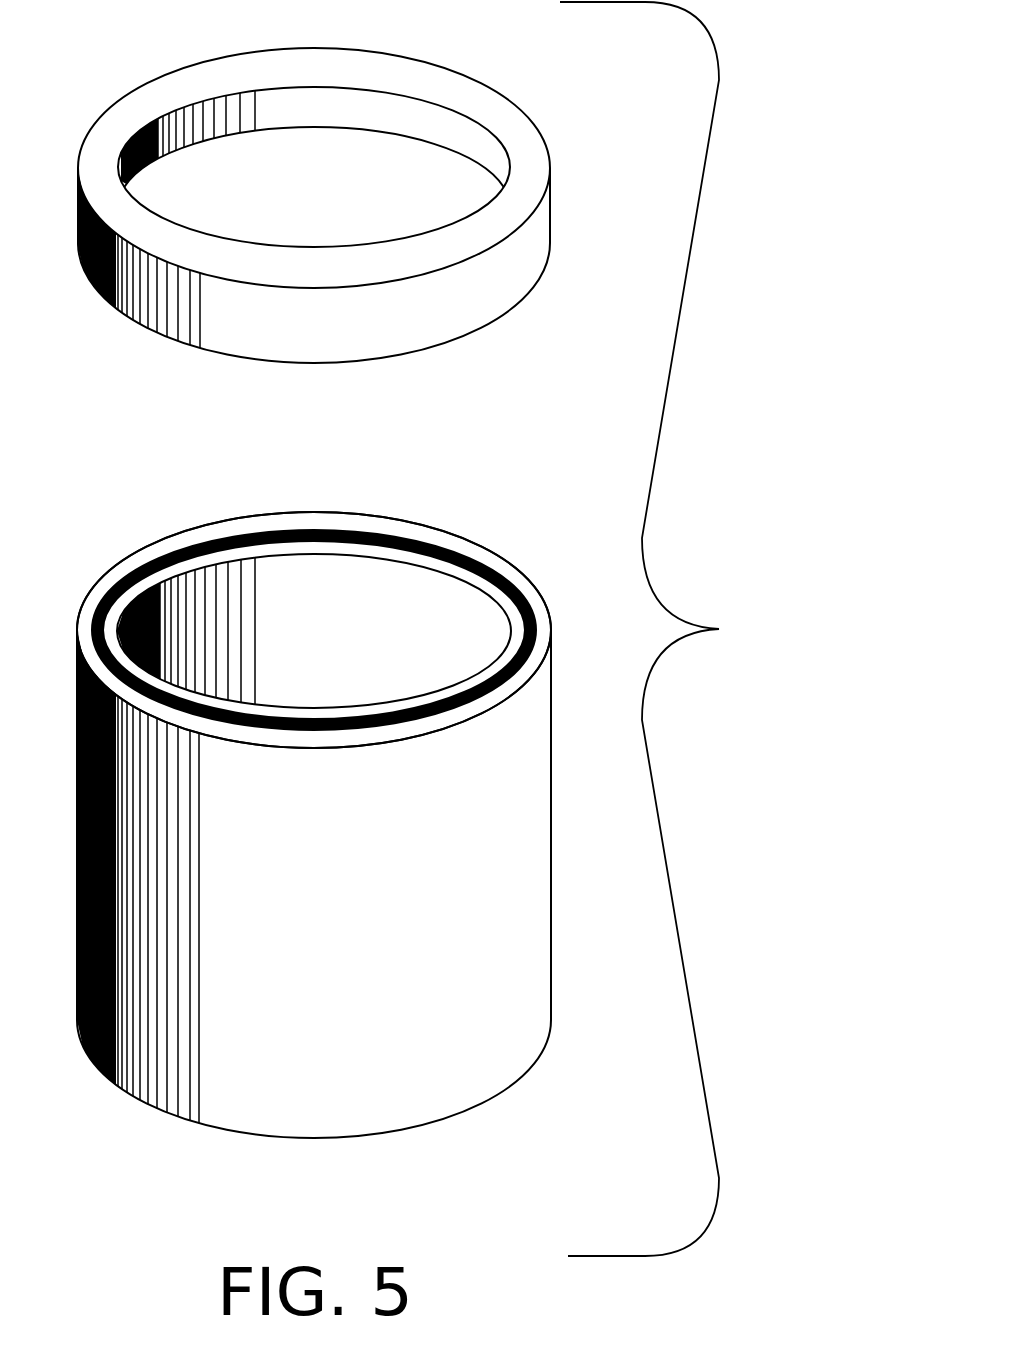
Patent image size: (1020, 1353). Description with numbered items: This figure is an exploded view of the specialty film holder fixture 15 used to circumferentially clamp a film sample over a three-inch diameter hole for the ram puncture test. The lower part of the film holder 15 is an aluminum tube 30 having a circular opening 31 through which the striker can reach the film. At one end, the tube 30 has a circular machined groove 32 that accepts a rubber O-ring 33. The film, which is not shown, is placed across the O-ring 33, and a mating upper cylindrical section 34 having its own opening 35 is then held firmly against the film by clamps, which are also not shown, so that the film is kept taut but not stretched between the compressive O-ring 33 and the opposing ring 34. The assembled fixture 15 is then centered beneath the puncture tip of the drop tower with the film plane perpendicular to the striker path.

The film holder fixture 15 is at (737, 631).
The aluminum tube 30 is at (338, 927).
The circular opening 31 is at (331, 646).
The circular machined groove 32 is at (457, 548).
The rubber O-ring 33 is at (173, 548).
The upper cylindrical section 34 is at (333, 341).
The opening 35 is at (333, 187).